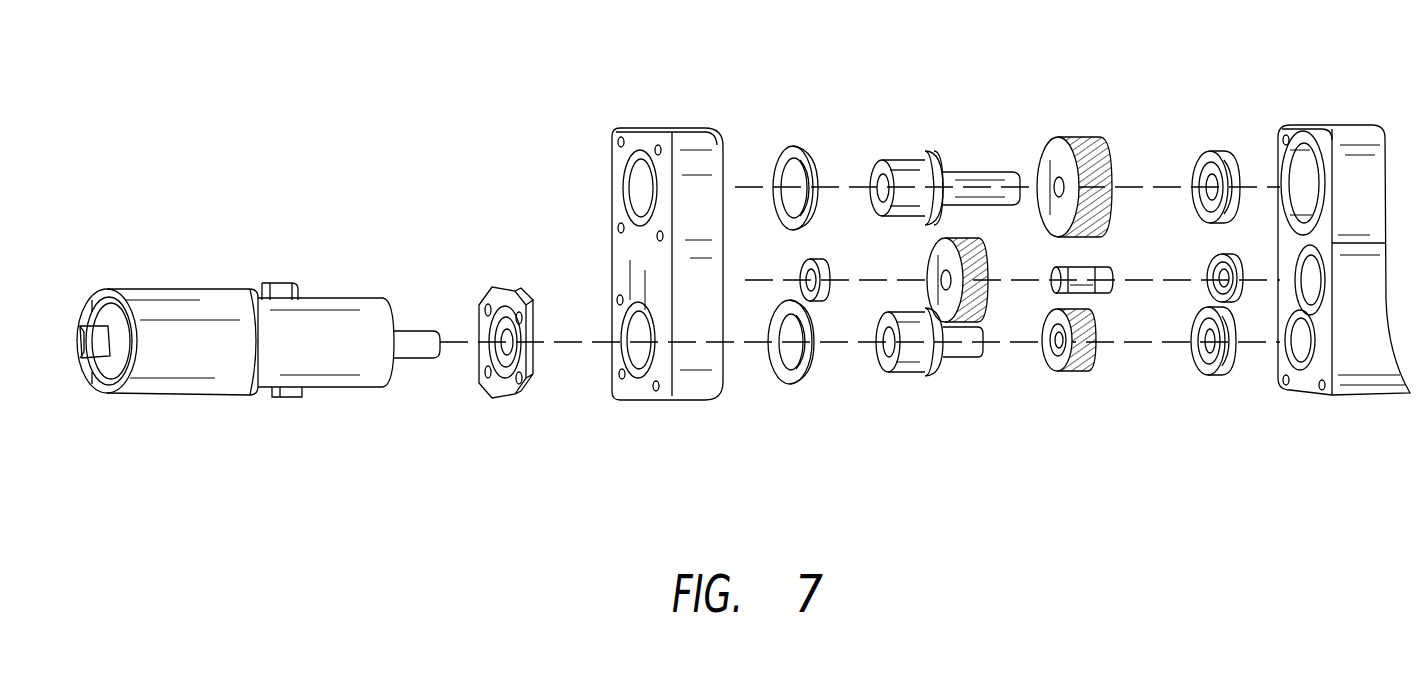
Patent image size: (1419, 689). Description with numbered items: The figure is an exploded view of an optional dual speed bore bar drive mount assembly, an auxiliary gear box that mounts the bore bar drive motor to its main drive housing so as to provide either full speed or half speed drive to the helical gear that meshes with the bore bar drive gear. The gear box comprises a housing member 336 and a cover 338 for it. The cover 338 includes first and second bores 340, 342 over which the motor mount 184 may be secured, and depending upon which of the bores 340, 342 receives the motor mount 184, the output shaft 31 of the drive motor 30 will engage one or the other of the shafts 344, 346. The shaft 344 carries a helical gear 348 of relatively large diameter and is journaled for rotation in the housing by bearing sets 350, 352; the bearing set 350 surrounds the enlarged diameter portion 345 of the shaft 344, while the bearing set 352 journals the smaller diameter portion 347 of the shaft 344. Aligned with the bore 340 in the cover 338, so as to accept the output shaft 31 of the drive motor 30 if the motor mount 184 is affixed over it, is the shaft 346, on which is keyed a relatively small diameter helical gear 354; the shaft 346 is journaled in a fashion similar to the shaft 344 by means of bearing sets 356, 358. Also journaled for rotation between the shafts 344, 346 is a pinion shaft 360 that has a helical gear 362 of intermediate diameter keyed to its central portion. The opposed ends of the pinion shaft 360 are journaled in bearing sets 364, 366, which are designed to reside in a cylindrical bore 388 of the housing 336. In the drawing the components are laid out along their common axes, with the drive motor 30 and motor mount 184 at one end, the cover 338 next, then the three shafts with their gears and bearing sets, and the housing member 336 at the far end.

The drive motor 30 is at (148, 288).
The output shaft 31 is at (417, 328).
The motor mount 184 is at (490, 287).
The housing member 336 is at (1333, 125).
The cover 338 is at (668, 128).
The first bore 340 is at (610, 370).
The second bore 342 is at (643, 182).
The shaft 344 is at (960, 170).
The enlarged diameter portion 345 is at (898, 163).
The shaft 346 is at (917, 372).
The smaller diameter portion 347 is at (988, 170).
The helical gear 348 is at (1067, 137).
The bearing set 350 is at (783, 152).
The bearing set 352 is at (1217, 155).
The helical gear 354 is at (1073, 370).
The bearing set 356 is at (780, 383).
The bearing set 358 is at (1220, 375).
The pinion shaft 360 is at (1110, 265).
The helical gear 362 is at (933, 255).
The bearing set 364 is at (802, 260).
The bearing set 366 is at (1208, 283).
The cylindrical bore 388 is at (1320, 277).